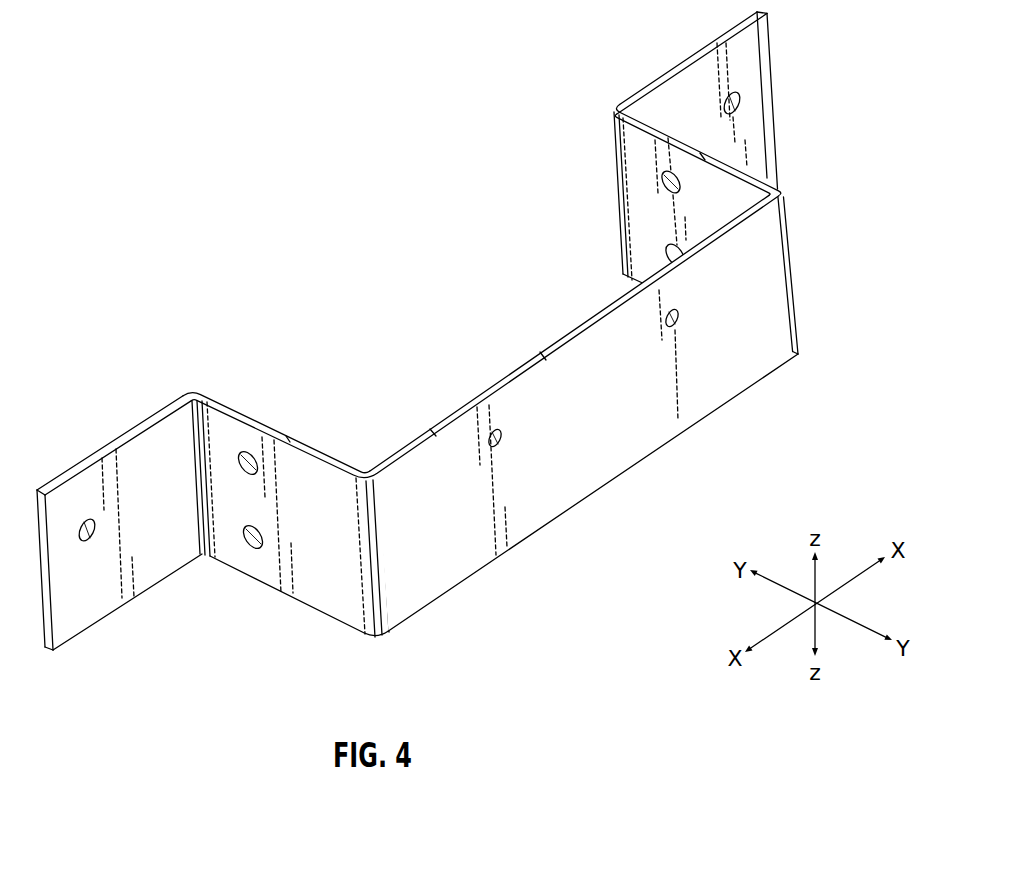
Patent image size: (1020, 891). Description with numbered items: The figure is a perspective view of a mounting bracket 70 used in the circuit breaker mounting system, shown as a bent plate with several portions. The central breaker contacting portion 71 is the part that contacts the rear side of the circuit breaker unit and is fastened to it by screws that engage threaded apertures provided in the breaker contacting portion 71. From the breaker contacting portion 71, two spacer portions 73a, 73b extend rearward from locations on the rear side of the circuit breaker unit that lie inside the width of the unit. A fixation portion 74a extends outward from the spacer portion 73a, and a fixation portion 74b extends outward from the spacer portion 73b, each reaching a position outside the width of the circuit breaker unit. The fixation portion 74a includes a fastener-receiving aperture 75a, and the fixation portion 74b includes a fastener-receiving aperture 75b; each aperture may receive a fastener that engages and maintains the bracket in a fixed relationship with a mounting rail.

The mounting bracket 70 is at (352, 129).
The breaker contacting portion 71 is at (587, 452).
The spacer portion 73a is at (777, 191).
The spacer portion 73b is at (288, 437).
The fixation portion 74a is at (768, 137).
The fixation portion 74b is at (158, 567).
The fastener-receiving aperture 75a is at (742, 101).
The fastener-receiving aperture 75b is at (90, 540).